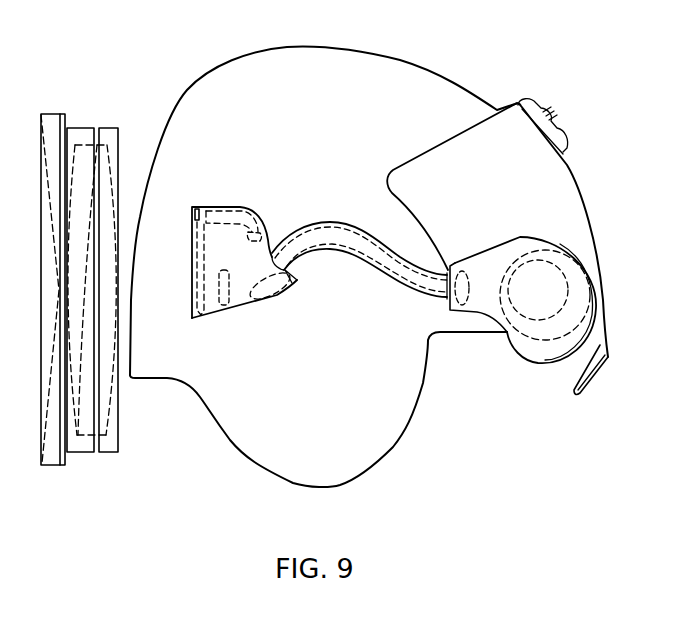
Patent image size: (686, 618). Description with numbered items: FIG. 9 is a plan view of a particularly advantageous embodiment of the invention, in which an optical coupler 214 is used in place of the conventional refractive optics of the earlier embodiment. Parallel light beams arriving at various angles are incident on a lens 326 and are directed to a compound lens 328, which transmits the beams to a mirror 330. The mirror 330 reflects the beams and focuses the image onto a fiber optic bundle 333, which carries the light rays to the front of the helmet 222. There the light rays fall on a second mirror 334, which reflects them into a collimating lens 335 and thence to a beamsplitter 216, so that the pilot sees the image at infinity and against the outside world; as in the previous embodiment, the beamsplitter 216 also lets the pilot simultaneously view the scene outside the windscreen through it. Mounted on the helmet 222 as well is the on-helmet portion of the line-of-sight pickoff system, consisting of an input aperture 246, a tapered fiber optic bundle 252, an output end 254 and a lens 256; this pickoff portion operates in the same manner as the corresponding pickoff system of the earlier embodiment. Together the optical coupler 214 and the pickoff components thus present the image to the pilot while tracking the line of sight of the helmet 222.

The helmet 222 is at (385, 72).
The input aperture 246 is at (193, 208).
The tapered fiber optic bundle 252 is at (238, 213).
The output end 254 is at (265, 250).
The lens 256 is at (204, 207).
The lens 326 is at (205, 313).
The compound lens 328 is at (229, 298).
The mirror 330 is at (275, 290).
The fiber optic bundle 333 is at (348, 233).
The optical coupler 214 is at (380, 275).
The mirror 334 is at (542, 253).
The collimating lens 335 is at (590, 288).
The beamsplitter 216 is at (598, 370).